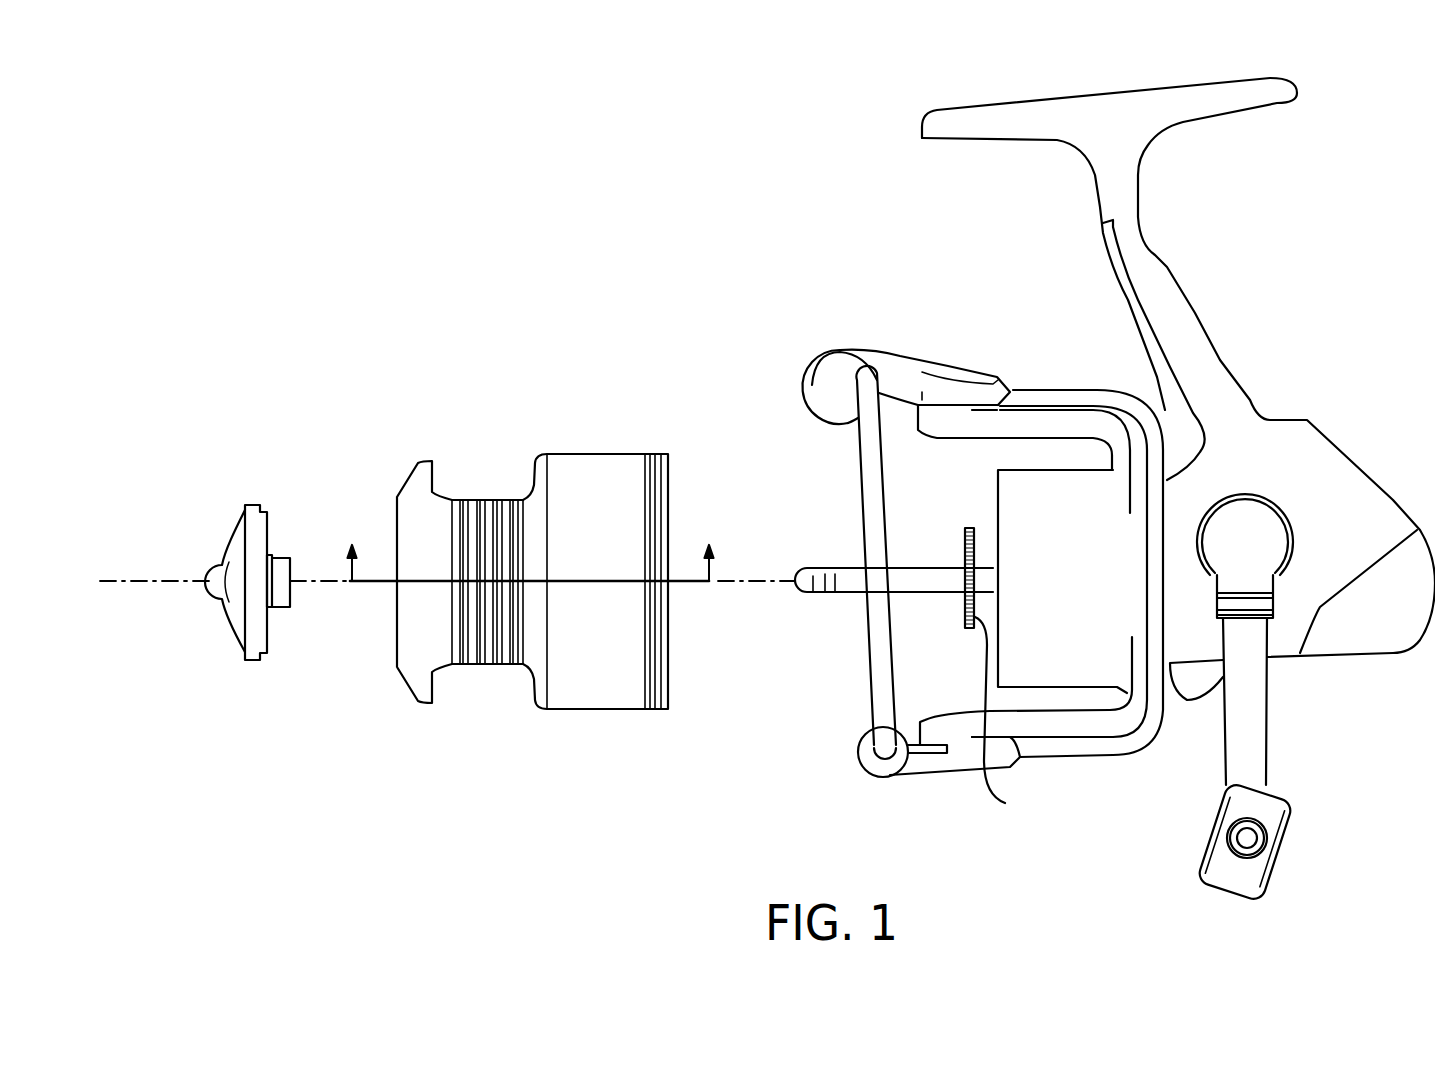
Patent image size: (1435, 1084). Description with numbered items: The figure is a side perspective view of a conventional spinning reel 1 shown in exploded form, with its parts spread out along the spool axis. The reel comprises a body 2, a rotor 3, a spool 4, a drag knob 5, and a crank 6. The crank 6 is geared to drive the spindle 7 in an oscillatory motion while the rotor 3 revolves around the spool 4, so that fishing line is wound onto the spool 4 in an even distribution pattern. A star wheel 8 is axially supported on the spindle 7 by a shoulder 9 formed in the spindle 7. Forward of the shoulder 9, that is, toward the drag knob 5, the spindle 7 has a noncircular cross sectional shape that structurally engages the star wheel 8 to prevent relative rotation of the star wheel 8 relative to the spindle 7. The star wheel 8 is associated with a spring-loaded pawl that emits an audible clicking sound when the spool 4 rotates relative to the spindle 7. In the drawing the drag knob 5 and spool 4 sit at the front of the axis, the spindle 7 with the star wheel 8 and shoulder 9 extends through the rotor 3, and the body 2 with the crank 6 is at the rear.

The spinning reel 1 is at (566, 301).
The body 2 is at (1249, 410).
The rotor 3 is at (962, 393).
The spool 4 is at (556, 602).
The drag knob 5 is at (209, 550).
The crank 6 is at (1281, 708).
The spindle 7 is at (833, 553).
The star wheel 8 is at (965, 632).
The shoulder 9 is at (1005, 803).